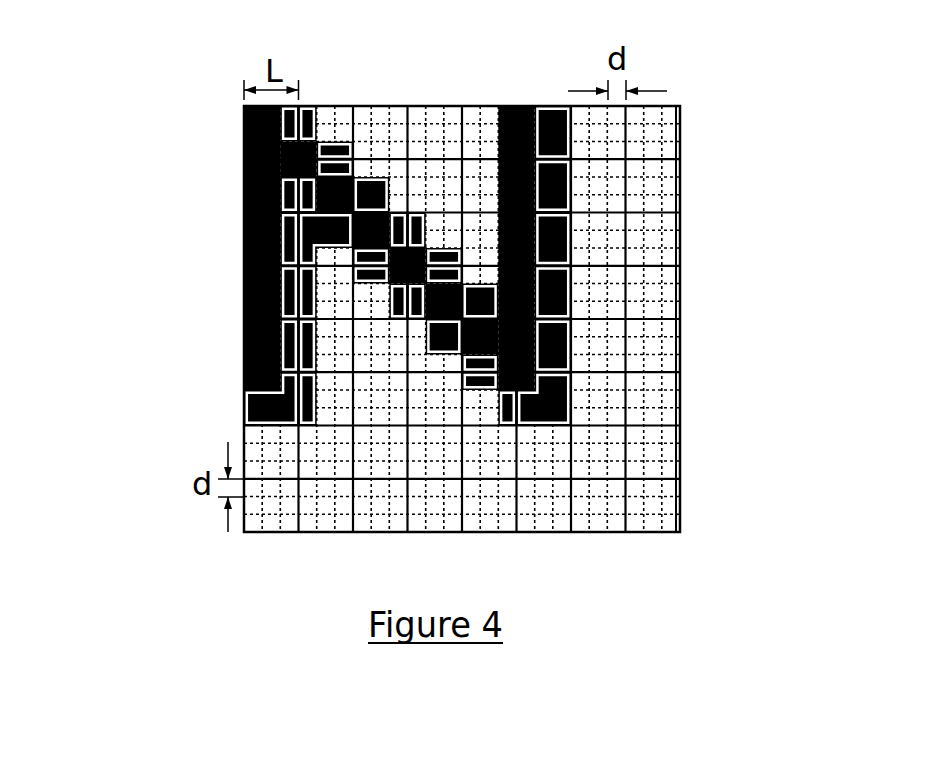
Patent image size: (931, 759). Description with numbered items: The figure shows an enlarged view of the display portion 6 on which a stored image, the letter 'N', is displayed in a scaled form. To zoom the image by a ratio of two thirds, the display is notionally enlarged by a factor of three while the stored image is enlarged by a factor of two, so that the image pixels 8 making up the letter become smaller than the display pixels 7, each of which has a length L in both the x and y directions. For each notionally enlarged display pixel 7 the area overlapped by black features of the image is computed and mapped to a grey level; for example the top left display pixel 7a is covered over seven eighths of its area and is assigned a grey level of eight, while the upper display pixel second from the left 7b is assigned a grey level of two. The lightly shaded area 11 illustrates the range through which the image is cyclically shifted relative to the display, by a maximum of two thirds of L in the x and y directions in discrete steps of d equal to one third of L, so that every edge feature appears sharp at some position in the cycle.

The display portion 6 is at (709, 395).
The display pixel 7 is at (682, 111).
The top left display pixel 7a is at (244, 124).
The upper display pixel second from the left 7b is at (318, 108).
The image pixel 8 is at (244, 170).
The lightly shaded area 11 is at (244, 418).